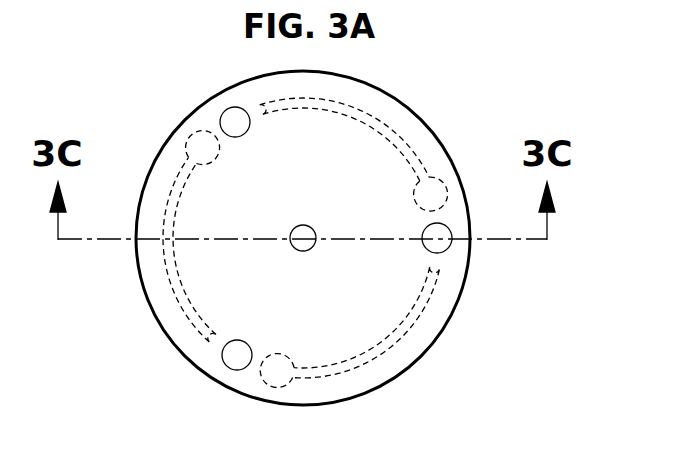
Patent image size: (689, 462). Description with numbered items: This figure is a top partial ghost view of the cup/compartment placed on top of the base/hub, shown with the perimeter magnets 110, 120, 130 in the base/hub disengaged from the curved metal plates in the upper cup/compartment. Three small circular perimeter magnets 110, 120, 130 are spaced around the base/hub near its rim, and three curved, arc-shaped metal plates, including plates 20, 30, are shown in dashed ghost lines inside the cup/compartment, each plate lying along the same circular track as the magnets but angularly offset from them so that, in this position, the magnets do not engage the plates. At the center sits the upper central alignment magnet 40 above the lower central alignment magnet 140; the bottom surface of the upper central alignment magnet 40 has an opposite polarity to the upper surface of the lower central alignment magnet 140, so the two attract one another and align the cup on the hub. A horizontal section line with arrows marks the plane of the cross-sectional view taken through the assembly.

The curved metal plate 20 is at (368, 113).
The curved metal plate 30 is at (363, 372).
The upper central alignment magnet 40 is at (441, 322).
The lower central alignment magnet 140 is at (307, 255).
The perimeter magnet 110 is at (232, 118).
The perimeter magnet 120 is at (443, 250).
The perimeter magnet 130 is at (235, 353).